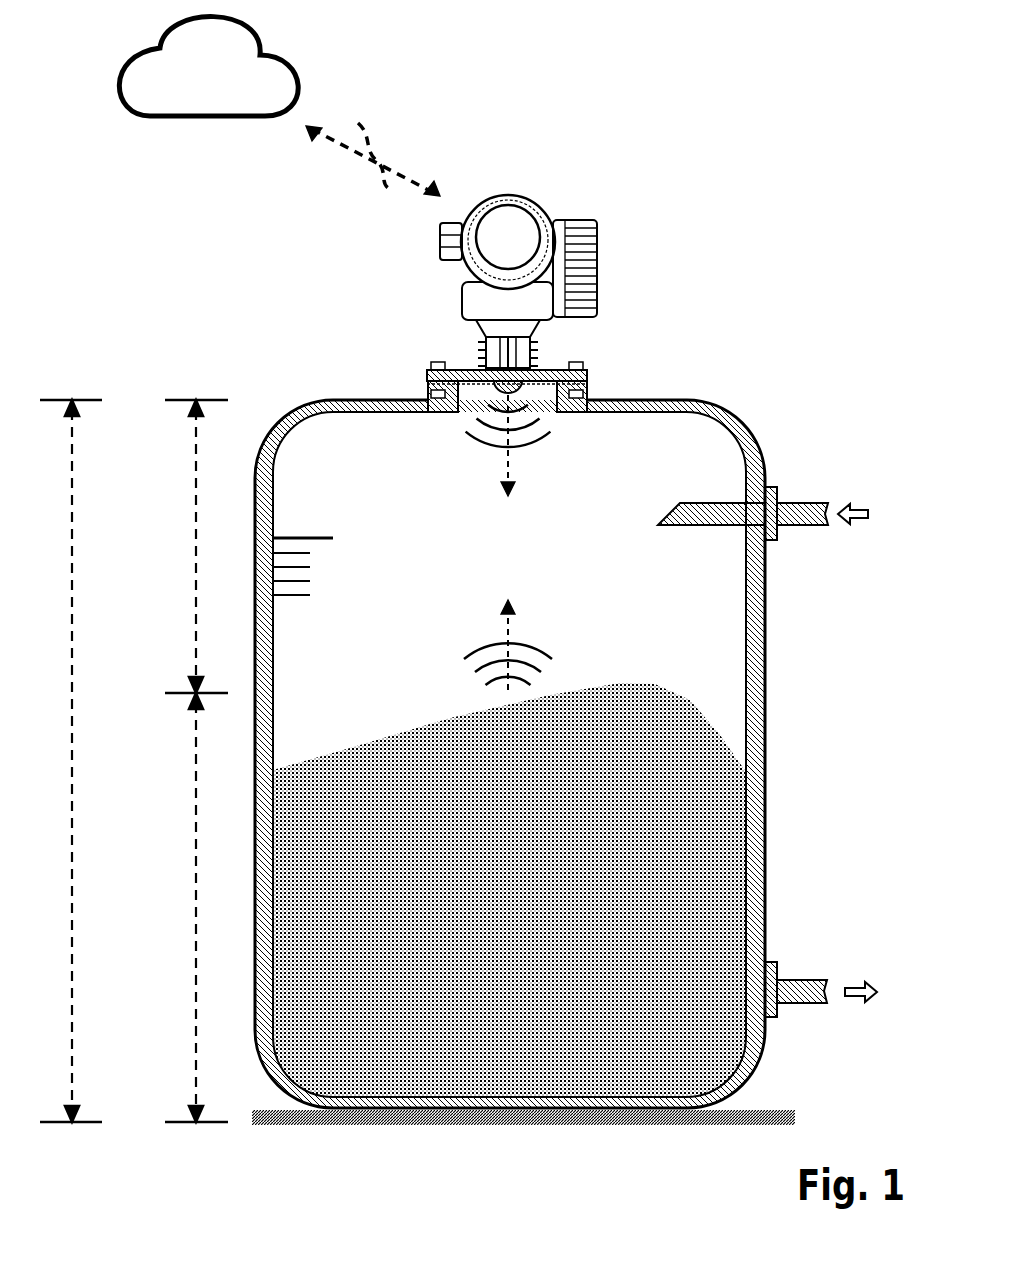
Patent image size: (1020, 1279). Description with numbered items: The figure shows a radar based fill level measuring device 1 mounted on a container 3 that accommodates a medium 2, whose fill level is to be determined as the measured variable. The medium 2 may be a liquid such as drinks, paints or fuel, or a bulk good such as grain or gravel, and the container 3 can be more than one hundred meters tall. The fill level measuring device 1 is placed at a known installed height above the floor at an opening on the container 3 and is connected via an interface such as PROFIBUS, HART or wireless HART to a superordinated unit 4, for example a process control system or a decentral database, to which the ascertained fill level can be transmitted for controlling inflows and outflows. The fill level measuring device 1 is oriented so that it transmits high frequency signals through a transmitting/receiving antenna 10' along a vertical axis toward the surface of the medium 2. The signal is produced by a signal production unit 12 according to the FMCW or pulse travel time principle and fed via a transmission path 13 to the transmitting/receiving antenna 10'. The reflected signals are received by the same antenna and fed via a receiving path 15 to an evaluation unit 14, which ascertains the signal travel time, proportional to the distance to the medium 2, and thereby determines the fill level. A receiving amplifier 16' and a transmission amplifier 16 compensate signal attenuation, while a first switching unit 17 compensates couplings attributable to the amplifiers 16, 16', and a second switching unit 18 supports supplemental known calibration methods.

The fill level measuring device 1 is at (680, 194).
The medium 2 is at (520, 856).
The container 3 is at (765, 830).
The superordinated unit 4 is at (222, 97).
The transmitting/receiving antenna 10' is at (502, 442).
The signal production unit 12 is at (354, 266).
The transmission path 13 is at (497, 352).
The evaluation unit 14 is at (357, 242).
The receiving path 15 is at (512, 343).
The transmission amplifier 16 is at (418, 268).
The receiving amplifier 16' is at (287, 275).
The first switching unit 17 is at (370, 261).
The second switching unit 18 is at (400, 309).